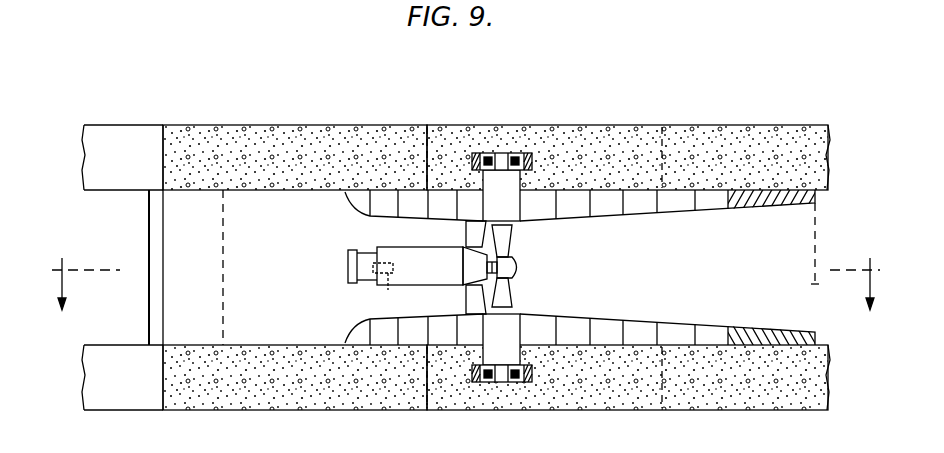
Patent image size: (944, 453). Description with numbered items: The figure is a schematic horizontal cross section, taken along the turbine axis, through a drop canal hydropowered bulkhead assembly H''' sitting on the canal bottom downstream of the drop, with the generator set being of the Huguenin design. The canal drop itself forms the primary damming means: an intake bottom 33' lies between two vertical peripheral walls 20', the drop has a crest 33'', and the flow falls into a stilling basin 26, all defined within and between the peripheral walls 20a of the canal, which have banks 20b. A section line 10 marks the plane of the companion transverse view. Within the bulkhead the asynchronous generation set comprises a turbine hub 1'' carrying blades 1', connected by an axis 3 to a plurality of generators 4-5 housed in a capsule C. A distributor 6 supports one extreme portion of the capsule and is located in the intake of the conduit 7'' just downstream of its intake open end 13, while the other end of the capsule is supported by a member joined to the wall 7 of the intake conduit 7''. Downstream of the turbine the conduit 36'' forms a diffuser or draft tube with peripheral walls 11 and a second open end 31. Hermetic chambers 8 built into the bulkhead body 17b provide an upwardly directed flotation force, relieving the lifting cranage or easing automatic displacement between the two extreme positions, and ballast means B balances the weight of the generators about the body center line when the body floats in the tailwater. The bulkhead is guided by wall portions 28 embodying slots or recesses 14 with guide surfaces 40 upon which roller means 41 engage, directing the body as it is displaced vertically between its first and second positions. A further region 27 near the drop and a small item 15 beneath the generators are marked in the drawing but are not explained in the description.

The blades 1' is at (517, 266).
The turbine hub 1'' is at (502, 268).
The axis 3 is at (478, 281).
The plurality of generators 4-5 is at (405, 266).
The distributor 6 is at (477, 246).
The wall of the intake conduit 7 is at (383, 267).
The intake conduit 7'' is at (410, 240).
The hermetic chambers 8 is at (388, 213).
The section line 10 is at (466, 284).
The peripheral walls 11 is at (626, 222).
The intake open end 13 is at (345, 324).
The slots or recesses 14 is at (500, 152).
The connection box 15 is at (386, 291).
The bulkhead body 17b is at (598, 346).
The vertical peripheral walls 20' is at (122, 267).
The peripheral walls 20a is at (732, 130).
The banks 20b is at (272, 142).
The stilling basin 26 is at (287, 287).
The channel chamber 27 is at (202, 287).
The wall portion 28 is at (449, 377).
The second open end 31 is at (811, 278).
The intake bottom 33' is at (108, 250).
The crest 33'' is at (121, 267).
The conduit 36'' is at (615, 271).
The guide surfaces 40 is at (471, 160).
The roller means 41 is at (516, 158).
The ballast means B is at (742, 215).
The capsule C is at (352, 245).
The hydropowered bulkhead assembly H''' is at (299, 222).